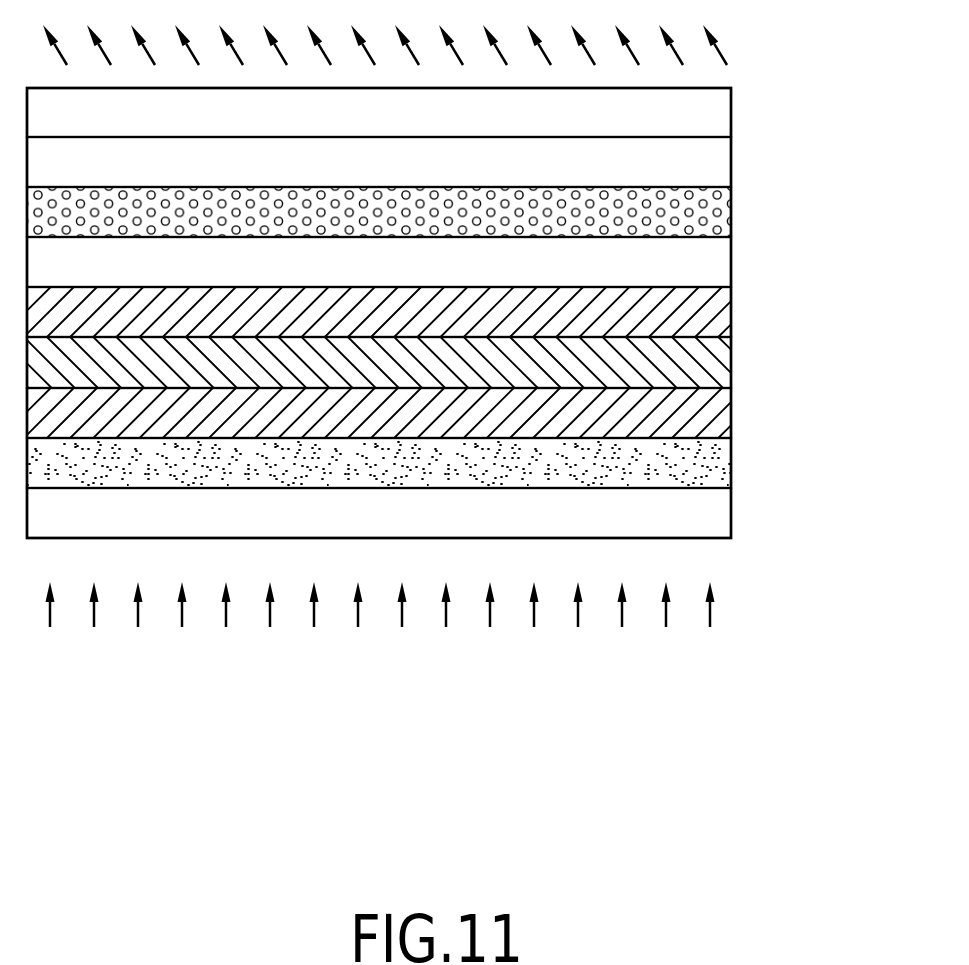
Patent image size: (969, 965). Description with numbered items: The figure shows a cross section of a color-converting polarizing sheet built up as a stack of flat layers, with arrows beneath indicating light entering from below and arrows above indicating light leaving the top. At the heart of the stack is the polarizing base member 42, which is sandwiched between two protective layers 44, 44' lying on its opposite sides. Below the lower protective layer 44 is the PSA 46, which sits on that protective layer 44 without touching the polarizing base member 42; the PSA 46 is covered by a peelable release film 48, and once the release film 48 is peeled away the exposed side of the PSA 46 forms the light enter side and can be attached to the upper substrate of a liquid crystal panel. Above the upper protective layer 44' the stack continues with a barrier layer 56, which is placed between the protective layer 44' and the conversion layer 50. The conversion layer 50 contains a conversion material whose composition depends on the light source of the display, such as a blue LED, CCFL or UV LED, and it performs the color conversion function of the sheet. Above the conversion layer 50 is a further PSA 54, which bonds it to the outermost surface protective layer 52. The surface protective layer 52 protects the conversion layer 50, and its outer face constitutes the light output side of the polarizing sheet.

The polarizing base member 42 is at (715, 375).
The protective layer 44 is at (444, 426).
The protective layer 44' is at (446, 312).
The PSA 46 is at (722, 467).
The release film 48 is at (723, 520).
The conversion layer 50 is at (732, 213).
The surface protective layer 52 is at (727, 115).
The PSA 54 is at (731, 160).
The barrier layer 56 is at (723, 262).